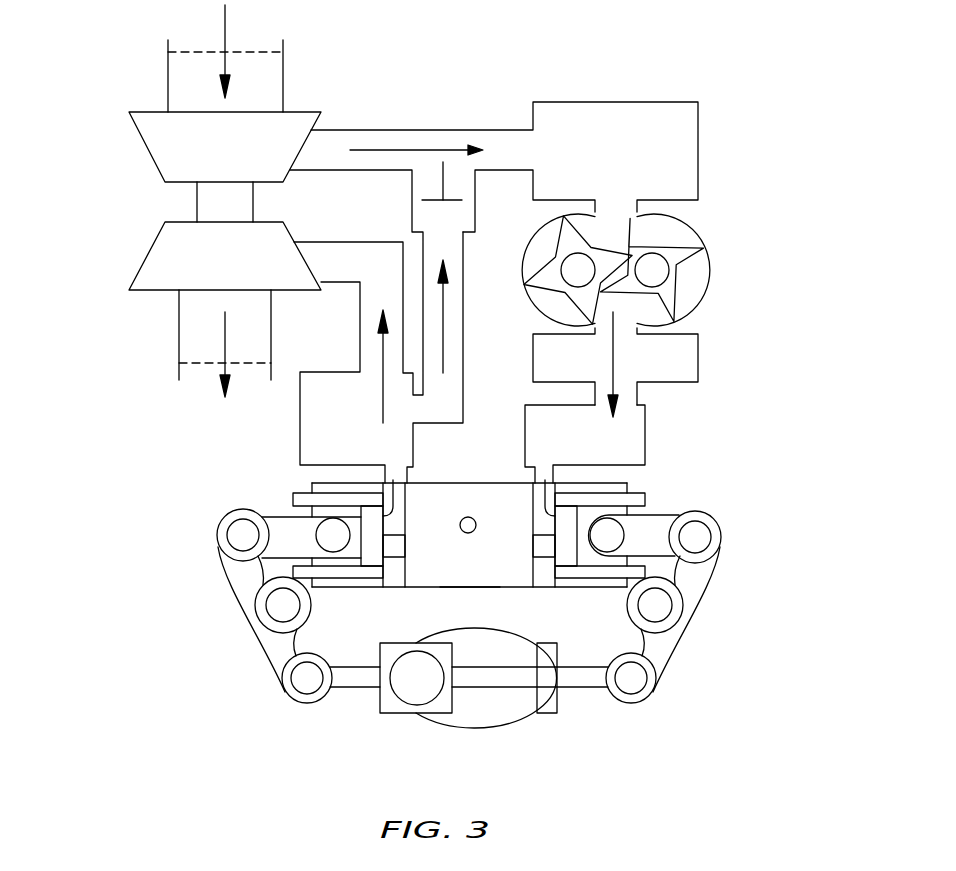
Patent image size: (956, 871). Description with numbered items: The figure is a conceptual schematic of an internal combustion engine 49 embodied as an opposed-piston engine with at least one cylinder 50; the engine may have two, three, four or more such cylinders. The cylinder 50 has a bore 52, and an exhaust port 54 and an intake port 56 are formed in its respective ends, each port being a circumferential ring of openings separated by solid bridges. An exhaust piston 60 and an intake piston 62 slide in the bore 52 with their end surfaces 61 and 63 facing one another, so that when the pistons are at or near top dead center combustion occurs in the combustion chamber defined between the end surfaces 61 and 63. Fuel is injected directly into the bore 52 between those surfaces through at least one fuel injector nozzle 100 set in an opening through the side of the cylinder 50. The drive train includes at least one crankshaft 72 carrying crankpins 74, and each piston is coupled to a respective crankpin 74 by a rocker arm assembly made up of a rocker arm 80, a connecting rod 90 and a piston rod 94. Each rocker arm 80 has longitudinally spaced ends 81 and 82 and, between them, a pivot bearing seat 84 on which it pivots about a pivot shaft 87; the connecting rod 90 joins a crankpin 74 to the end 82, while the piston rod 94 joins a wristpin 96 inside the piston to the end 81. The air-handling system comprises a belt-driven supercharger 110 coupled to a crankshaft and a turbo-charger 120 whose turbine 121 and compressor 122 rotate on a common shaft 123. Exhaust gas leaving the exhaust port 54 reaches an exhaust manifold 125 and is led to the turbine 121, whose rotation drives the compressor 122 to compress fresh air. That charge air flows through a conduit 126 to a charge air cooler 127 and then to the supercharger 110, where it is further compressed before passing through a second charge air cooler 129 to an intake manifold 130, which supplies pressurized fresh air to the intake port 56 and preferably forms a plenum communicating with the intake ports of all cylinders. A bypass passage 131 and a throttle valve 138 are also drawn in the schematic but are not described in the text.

The internal combustion engine 49 is at (790, 363).
The cylinder 50 is at (425, 487).
The bore 52 is at (468, 578).
The exhaust port 54 is at (423, 557).
The intake port 56 is at (519, 568).
The exhaust piston 60 is at (294, 494).
The end surface 61 is at (394, 480).
The intake piston 62 is at (646, 494).
The end surface 63 is at (545, 480).
The crankshaft 72 is at (505, 748).
The crankpin 74 is at (408, 687).
The rocker arm 80 is at (698, 624).
The end 81 is at (721, 540).
The end 82 is at (641, 703).
The pivot bearing seat 84 is at (672, 590).
The pivot shaft 87 is at (655, 612).
The connecting rod 90 is at (567, 667).
The piston rod 94 is at (683, 507).
The wristpin 96 is at (597, 548).
The fuel injector nozzle 100 is at (460, 524).
The supercharger 110 is at (700, 228).
The turbo-charger 120 is at (130, 205).
The turbine 121 is at (144, 262).
The compressor 122 is at (146, 144).
The common shaft 123 is at (255, 200).
The exhaust manifold 125 is at (300, 418).
The conduit 126 is at (398, 132).
The charge air cooler 127 is at (698, 158).
The charge air cooler 129 is at (698, 355).
The intake manifold 130 is at (645, 443).
The bypass passage 131 is at (463, 302).
The throttle valve 138 is at (443, 178).